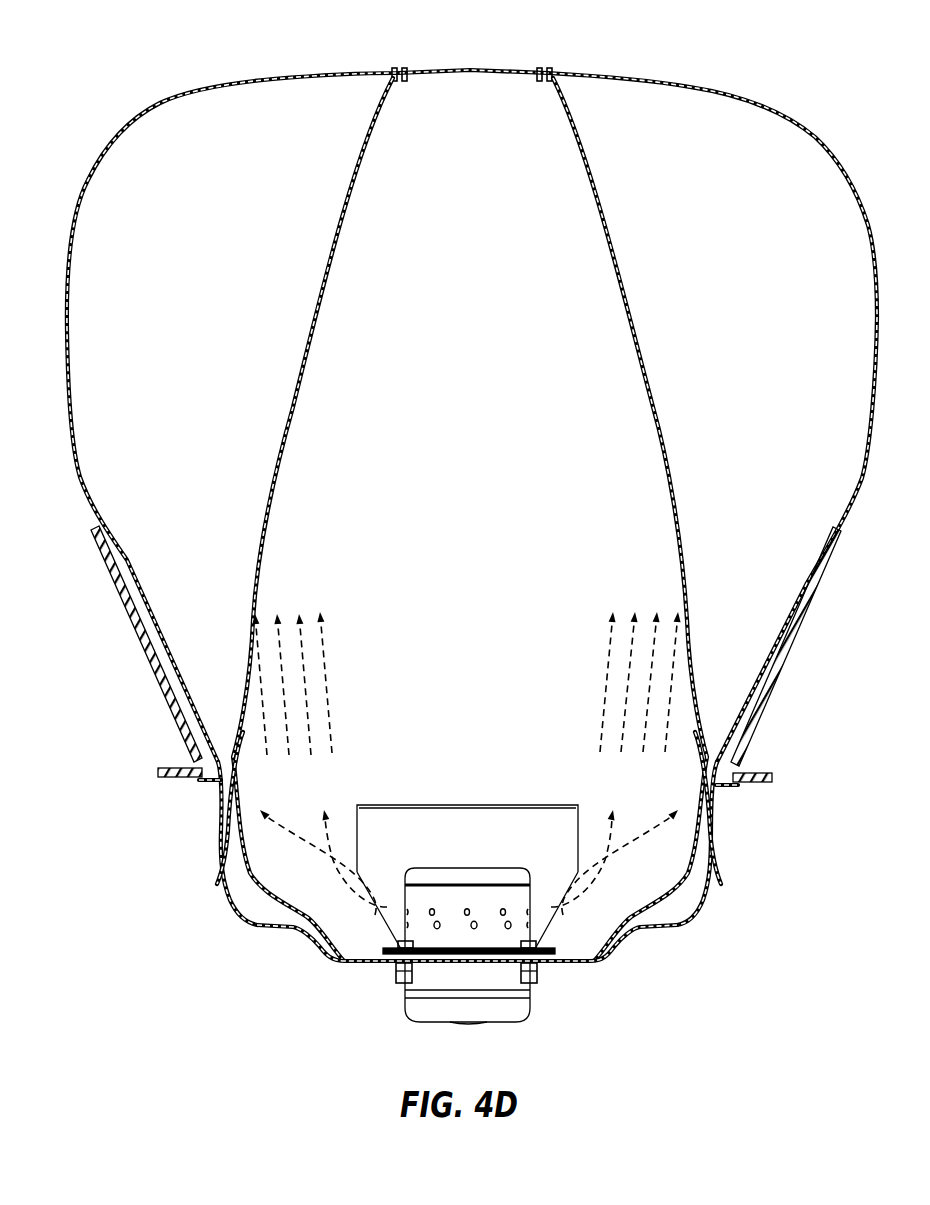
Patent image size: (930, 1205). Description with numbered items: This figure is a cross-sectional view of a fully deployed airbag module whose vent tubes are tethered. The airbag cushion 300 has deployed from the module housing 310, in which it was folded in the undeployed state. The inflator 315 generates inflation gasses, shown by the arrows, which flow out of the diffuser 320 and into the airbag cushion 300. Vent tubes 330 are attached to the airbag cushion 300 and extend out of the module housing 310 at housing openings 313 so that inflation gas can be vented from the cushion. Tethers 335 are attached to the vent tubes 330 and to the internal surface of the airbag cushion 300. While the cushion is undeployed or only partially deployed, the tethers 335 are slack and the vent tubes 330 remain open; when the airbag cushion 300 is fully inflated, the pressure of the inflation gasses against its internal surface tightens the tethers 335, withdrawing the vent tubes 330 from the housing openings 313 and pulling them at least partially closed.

The airbag cushion 300 is at (695, 84).
The module housing 310 is at (675, 928).
The housing openings 313 is at (228, 898).
The inflator 315 is at (450, 938).
The diffuser 320 is at (507, 845).
The vent tubes 330 is at (215, 872).
The tethers 335 is at (290, 407).